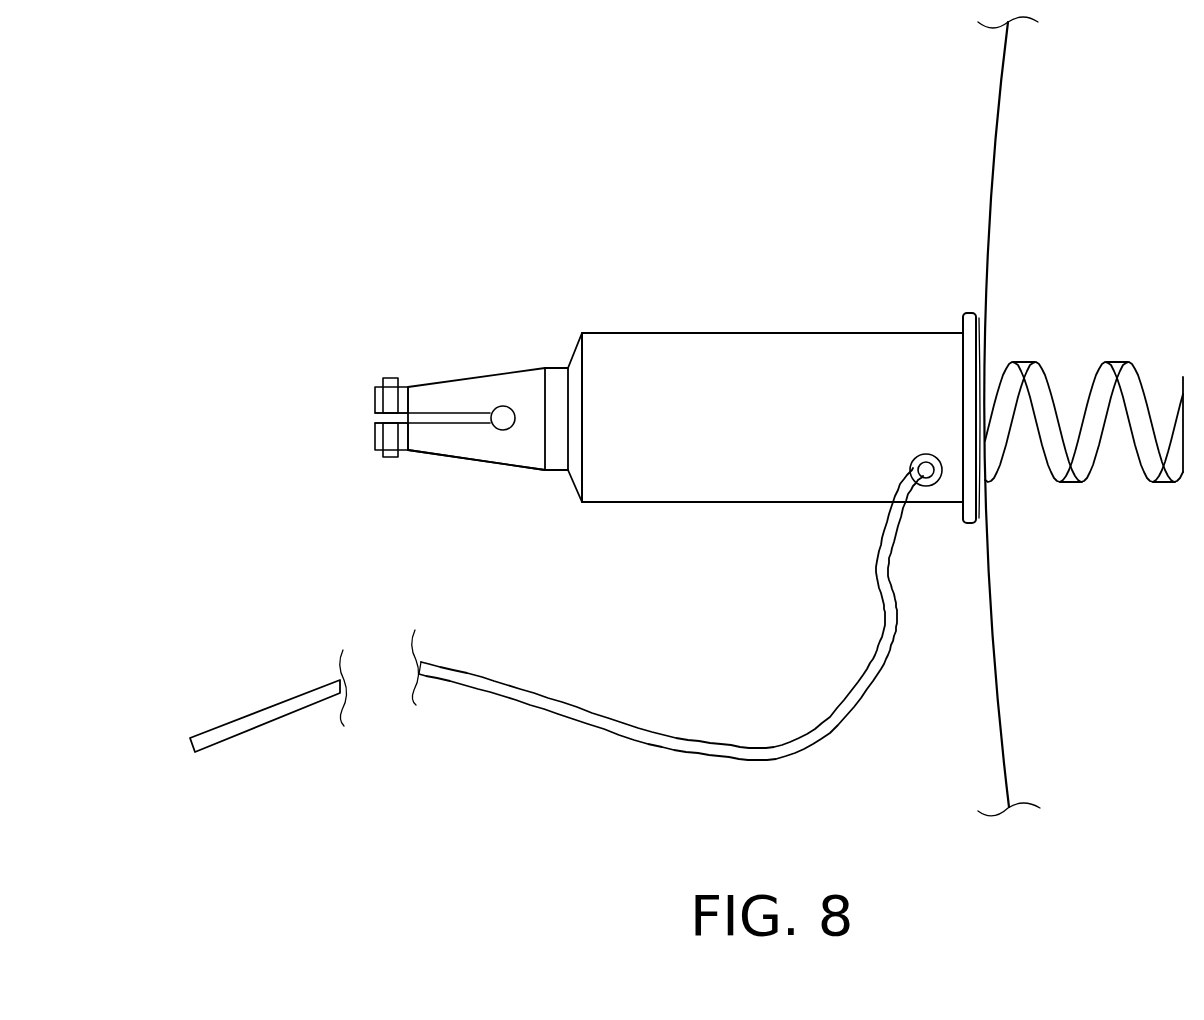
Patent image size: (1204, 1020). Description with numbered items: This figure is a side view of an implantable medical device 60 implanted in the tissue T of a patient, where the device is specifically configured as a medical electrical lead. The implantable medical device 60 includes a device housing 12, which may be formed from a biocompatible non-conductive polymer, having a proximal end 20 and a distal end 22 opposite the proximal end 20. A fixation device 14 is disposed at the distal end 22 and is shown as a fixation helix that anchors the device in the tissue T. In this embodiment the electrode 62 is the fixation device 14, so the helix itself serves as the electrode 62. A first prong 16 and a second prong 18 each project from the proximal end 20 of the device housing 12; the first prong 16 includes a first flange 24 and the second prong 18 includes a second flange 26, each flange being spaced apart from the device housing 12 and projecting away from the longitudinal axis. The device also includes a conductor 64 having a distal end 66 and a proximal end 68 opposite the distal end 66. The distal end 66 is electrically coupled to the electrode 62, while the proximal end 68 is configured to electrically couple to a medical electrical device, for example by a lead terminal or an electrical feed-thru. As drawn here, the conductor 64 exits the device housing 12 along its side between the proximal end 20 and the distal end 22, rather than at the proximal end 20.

The device housing 12 is at (717, 333).
The fixation device 14 is at (1087, 395).
The first prong 16 is at (460, 378).
The second prong 18 is at (442, 457).
The proximal end 20 is at (550, 367).
The distal end 22 is at (980, 313).
The first flange 24 is at (390, 377).
The second flange 26 is at (387, 457).
The implantable medical device 60 is at (658, 383).
The electrode 62 is at (1036, 362).
The conductor 64 is at (860, 672).
The distal end 66 is at (917, 467).
The proximal end 68 is at (210, 727).
The tissue T is at (997, 110).